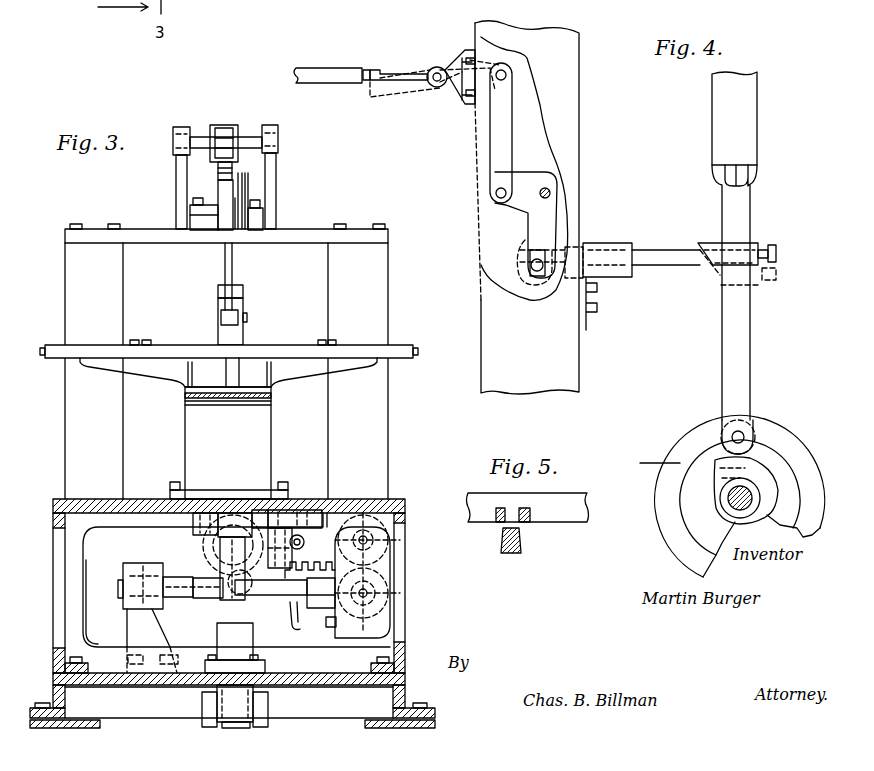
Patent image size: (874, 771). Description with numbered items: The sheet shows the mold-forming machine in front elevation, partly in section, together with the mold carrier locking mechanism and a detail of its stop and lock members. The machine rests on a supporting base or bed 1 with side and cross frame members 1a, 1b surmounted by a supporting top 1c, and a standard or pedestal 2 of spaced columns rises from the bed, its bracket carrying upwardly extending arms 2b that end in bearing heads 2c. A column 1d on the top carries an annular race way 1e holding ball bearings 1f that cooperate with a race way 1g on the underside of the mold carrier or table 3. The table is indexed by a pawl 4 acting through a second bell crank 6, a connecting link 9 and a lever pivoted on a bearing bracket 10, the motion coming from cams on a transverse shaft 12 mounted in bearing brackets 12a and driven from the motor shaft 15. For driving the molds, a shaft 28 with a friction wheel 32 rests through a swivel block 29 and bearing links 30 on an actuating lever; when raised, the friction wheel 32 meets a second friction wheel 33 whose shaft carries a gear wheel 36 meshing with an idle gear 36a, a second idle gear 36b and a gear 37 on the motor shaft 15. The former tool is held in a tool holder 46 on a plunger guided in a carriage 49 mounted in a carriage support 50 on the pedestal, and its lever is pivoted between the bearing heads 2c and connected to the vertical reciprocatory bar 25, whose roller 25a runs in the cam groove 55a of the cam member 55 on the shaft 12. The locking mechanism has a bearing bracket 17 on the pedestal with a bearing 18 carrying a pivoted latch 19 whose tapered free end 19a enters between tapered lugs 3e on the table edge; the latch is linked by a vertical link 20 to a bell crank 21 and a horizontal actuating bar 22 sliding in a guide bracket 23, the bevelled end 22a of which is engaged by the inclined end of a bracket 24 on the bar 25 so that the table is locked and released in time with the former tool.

In FIG. 3, the supporting base or bed 1 is at (323, 678).
In FIG. 3, the side frame member 1a is at (405, 636).
In FIG. 3, the cross frame member 1b is at (77, 550).
In FIG. 3, the supporting top 1c is at (300, 510).
In FIG. 3, the column 1d is at (278, 428).
In FIG. 3, the annular race way 1e is at (273, 403).
In FIG. 3, the ball bearings 1f is at (273, 393).
In FIG. 3, the annular race way 1g is at (182, 389).
In FIG. 3, the standard or pedestal 2 is at (65, 424).
In FIG. 4, the standard or pedestal 2 is at (578, 383).
In FIG. 3, the bracket arms 2b is at (177, 186).
In FIG. 3, the bearing heads 2c is at (178, 127).
In FIG. 3, the mold carrier or table 3 is at (296, 352).
In FIG. 4, the mold carrier or table 3 is at (366, 70).
In FIG. 3, the tapered lugs 3e is at (134, 344).
In FIG. 4, the tapered lugs 3e is at (366, 75).
In FIG. 5, the tapered lugs 3e is at (530, 520).
In FIG. 3, the pawl 4 is at (280, 510).
In FIG. 3, the second bell crank 6 is at (266, 586).
In FIG. 3, the connecting link 9 is at (283, 594).
In FIG. 3, the bearing bracket 10 is at (318, 608).
In FIG. 4, the transversely extending shaft 12 is at (752, 489).
In FIG. 3, the bearing brackets 12a is at (127, 625).
In FIG. 3, the motor shaft 15 is at (405, 603).
In FIG. 4, the bearing bracket 17 is at (460, 60).
In FIG. 4, the bearing 18 is at (434, 68).
In FIG. 4, the pivoted lever or latch 19 is at (486, 72).
In FIG. 4, the free end of latch 19a is at (388, 72).
In FIG. 5, the free end of latch 19a is at (513, 555).
In FIG. 4, the vertically extending link 20 is at (500, 135).
In FIG. 4, the bell crank 21 is at (548, 216).
In FIG. 4, the actuating bar 22 is at (655, 266).
In FIG. 4, the bevelled end 22a is at (715, 278).
In FIG. 4, the guide or bearing bracket 23 is at (616, 247).
In FIG. 4, the bracket 24 is at (712, 248).
In FIG. 4, the reciprocatory connecting bar 25 is at (742, 222).
In FIG. 4, the roller 25a is at (758, 432).
In FIG. 3, the shaft 28 is at (232, 623).
In FIG. 3, the swivel block 29 is at (215, 696).
In FIG. 3, the bearing links 30 is at (207, 720).
In FIG. 3, the friction wheel 32 is at (207, 590).
In FIG. 3, the second friction wheel 33 is at (208, 552).
In FIG. 3, the gear wheel 36 is at (203, 564).
In FIG. 3, the idle gear 36a is at (343, 512).
In FIG. 3, the second idle gear 36b is at (394, 537).
In FIG. 3, the gear 37 is at (395, 587).
In FIG. 3, the tool holder 46 is at (228, 271).
In FIG. 3, the carriage 49 is at (225, 214).
In FIG. 3, the carriage guide support or bracket 50 is at (260, 226).
In FIG. 4, the cam member 55 is at (696, 428).
In FIG. 4, the cam groove 55a is at (688, 473).